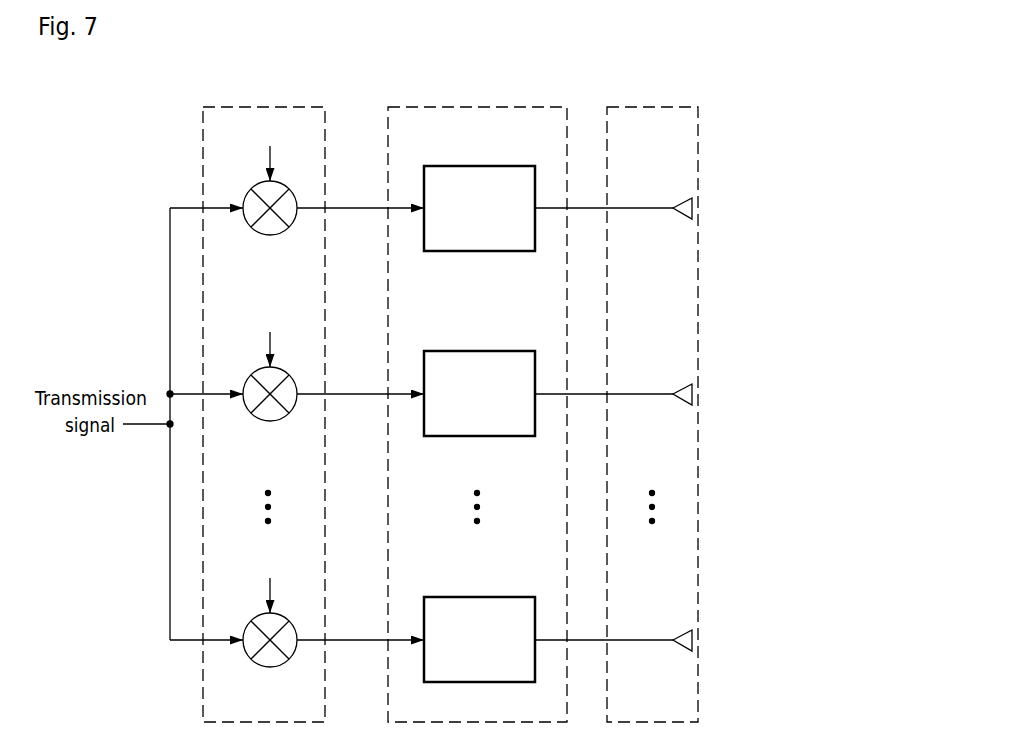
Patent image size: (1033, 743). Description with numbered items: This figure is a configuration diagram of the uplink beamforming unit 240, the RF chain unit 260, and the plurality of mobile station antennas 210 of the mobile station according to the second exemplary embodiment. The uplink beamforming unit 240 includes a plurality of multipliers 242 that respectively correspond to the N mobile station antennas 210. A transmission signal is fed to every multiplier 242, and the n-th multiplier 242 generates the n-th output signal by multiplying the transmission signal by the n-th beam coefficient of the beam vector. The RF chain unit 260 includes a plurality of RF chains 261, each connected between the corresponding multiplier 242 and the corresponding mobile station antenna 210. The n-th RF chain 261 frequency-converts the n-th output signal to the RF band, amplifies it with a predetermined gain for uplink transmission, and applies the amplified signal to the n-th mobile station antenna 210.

The mobile station antennas 210 is at (676, 105).
The uplink beamforming unit 240 is at (285, 105).
The multiplier 242 is at (268, 236).
The RF chain unit 260 is at (522, 105).
The RF chain 261 is at (500, 166).